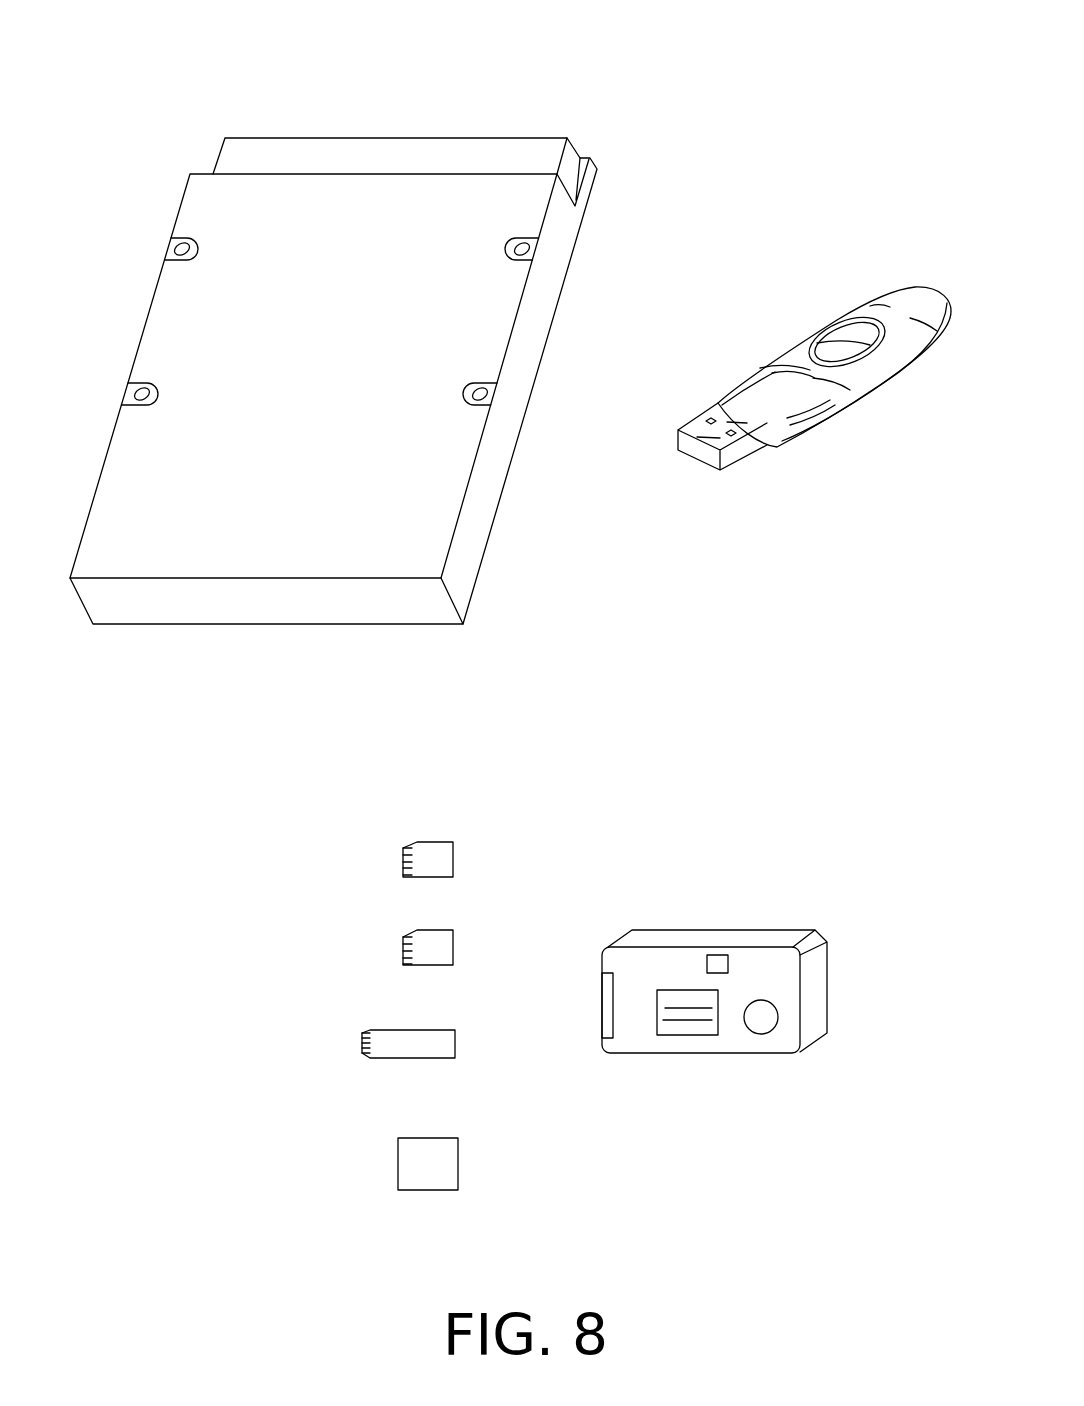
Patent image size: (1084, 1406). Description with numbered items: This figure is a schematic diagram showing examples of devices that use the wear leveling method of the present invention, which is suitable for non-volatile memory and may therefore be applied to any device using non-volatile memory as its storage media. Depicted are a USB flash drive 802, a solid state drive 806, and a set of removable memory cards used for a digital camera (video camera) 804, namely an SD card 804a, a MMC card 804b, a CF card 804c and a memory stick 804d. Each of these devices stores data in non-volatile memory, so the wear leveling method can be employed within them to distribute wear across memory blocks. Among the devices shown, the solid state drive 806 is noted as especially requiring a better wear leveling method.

The solid state drive 806 is at (540, 118).
The USB flash drive 802 is at (805, 345).
The digital camera 804 is at (827, 977).
The SD card 804a is at (453, 848).
The MMC card 804b is at (453, 937).
The CF card 804c is at (458, 1157).
The memory stick 804d is at (455, 1043).